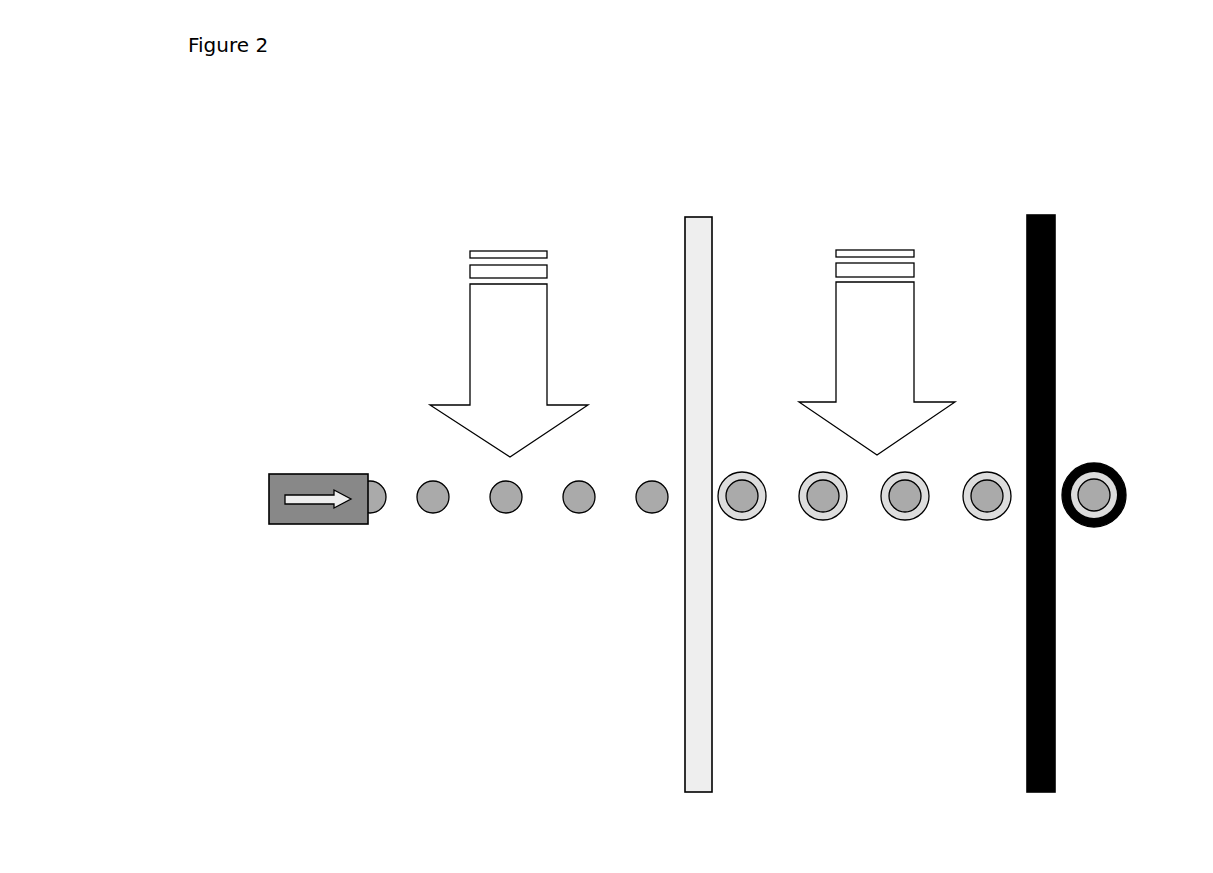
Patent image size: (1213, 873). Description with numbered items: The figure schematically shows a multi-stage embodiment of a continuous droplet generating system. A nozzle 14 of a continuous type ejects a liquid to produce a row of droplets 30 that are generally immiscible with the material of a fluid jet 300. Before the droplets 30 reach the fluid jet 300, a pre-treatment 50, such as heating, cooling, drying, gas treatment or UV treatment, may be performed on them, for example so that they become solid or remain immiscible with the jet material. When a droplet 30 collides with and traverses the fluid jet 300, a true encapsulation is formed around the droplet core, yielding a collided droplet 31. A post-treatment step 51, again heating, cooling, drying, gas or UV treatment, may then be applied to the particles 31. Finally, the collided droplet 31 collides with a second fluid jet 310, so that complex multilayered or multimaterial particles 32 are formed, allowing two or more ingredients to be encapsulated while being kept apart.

The nozzle 14 is at (313, 512).
The droplets 30 is at (436, 500).
The collided droplet 31 is at (828, 497).
The multilayered particle 32 is at (1093, 497).
The pre-treatment 50 is at (486, 272).
The post-treatment step 51 is at (885, 270).
The fluid jet 300 is at (702, 238).
The second fluid jet 310 is at (1054, 242).